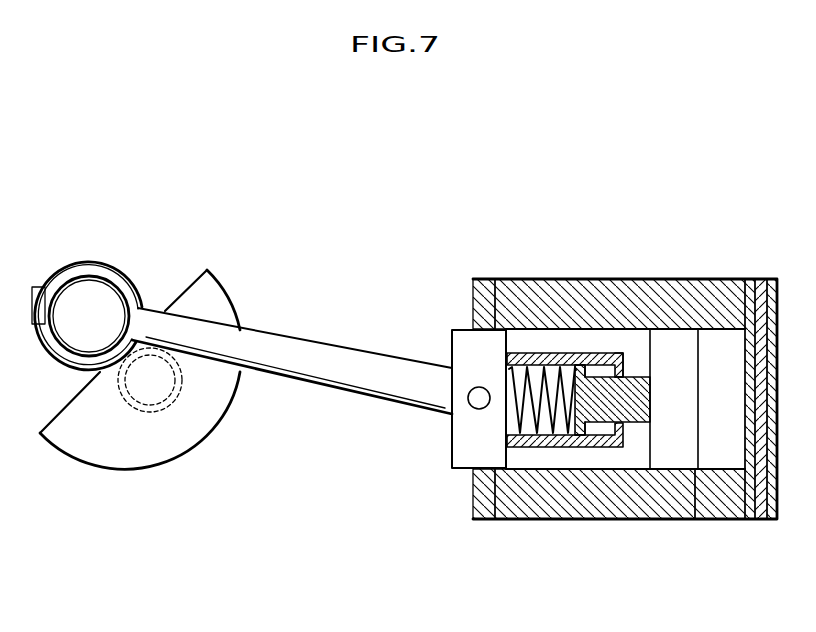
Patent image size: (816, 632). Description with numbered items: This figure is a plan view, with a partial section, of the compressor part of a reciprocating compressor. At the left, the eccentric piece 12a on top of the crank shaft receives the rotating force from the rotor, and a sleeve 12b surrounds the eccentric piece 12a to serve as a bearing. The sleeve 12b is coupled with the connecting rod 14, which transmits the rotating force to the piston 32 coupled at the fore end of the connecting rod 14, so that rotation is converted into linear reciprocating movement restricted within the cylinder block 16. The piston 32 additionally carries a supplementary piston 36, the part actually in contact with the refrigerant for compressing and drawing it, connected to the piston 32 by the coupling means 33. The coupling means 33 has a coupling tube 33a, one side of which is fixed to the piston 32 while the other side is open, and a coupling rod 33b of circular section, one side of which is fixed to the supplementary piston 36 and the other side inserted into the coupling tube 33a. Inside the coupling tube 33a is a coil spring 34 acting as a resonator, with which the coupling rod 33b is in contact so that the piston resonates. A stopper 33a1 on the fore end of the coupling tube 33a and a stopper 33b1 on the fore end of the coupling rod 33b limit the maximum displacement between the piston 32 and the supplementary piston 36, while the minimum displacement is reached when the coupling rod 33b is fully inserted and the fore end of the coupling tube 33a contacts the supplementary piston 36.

The eccentric piece 12a is at (77, 296).
The sleeve 12b is at (115, 283).
The connecting rod 14 is at (341, 384).
The cylinder block 16 is at (515, 283).
The piston 32 is at (462, 469).
The coupling means 33 is at (623, 431).
The coupling tube 33a is at (591, 404).
The stopper 33a1 is at (621, 368).
The coupling rod 33b is at (647, 404).
The stopper 33b1 is at (581, 366).
The coil spring 34 is at (523, 420).
The supplementary piston 36 is at (677, 348).